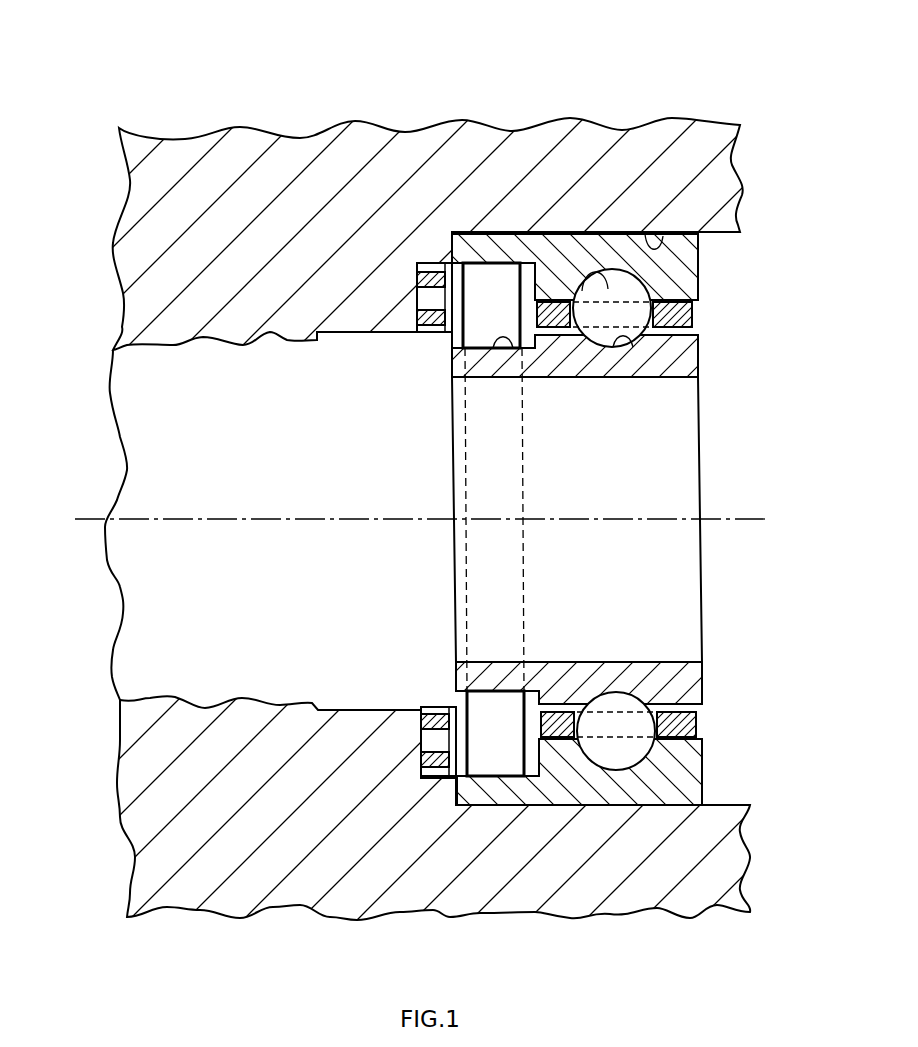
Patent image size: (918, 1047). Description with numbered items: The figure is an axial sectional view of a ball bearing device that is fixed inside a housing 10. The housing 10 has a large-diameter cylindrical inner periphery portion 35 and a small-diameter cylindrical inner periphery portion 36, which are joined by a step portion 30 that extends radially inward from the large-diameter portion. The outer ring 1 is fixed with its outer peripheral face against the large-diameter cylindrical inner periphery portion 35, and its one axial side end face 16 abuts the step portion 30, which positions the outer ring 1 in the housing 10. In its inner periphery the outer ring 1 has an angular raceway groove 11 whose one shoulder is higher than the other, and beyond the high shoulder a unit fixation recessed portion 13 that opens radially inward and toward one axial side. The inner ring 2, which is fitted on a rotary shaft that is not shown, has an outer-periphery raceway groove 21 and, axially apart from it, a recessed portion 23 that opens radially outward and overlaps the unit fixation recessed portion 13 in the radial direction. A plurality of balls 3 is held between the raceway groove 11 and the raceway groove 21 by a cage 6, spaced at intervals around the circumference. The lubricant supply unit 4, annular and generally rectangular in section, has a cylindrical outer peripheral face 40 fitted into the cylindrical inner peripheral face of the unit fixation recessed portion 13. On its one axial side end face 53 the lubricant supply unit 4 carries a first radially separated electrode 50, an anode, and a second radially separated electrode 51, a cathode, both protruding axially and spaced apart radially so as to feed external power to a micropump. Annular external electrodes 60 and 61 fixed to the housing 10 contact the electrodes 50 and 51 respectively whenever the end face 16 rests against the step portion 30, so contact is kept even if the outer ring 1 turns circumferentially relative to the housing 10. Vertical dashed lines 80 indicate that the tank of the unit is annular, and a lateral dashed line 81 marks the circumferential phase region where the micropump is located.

The housing 10 is at (198, 178).
The outer ring 1 is at (683, 250).
The inner ring 2 is at (685, 360).
The balls 3 is at (637, 286).
The cage 6 is at (690, 312).
The lubricant supply unit 4 is at (492, 280).
The cylindrical outer peripheral face 40 is at (514, 264).
The step portion 30 is at (464, 234).
The one axial side end face 16 is at (452, 262).
The small-diameter cylindrical inner periphery portion 36 is at (420, 266).
The raceway groove 11 is at (590, 275).
The large-diameter cylindrical inner periphery portion 35 is at (658, 236).
The first external electrode 60 is at (440, 300).
The second external electrode 61 is at (447, 303).
The first radially separated electrode 50 is at (448, 318).
The second radially separated electrode 51 is at (447, 328).
The one axial side end face 53 is at (446, 350).
The dashed lines 80 is at (465, 583).
The dashed line 81 is at (490, 667).
The raceway groove 21 is at (617, 338).
The unit fixation recessed portion 13 is at (525, 342).
The recessed portion 23 is at (530, 352).